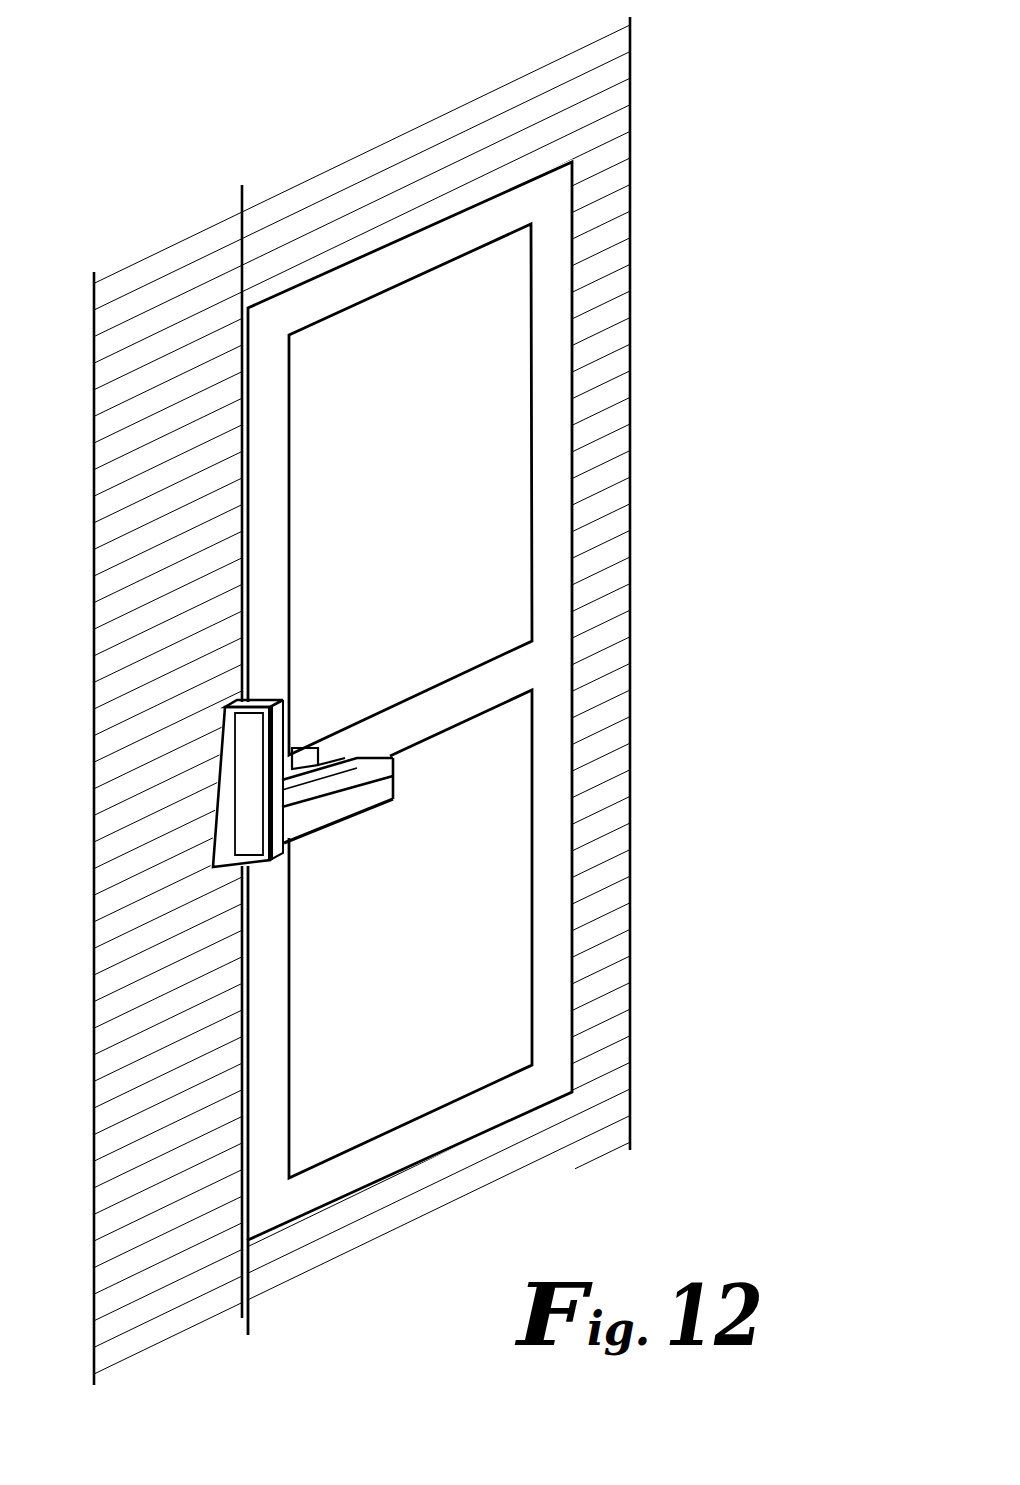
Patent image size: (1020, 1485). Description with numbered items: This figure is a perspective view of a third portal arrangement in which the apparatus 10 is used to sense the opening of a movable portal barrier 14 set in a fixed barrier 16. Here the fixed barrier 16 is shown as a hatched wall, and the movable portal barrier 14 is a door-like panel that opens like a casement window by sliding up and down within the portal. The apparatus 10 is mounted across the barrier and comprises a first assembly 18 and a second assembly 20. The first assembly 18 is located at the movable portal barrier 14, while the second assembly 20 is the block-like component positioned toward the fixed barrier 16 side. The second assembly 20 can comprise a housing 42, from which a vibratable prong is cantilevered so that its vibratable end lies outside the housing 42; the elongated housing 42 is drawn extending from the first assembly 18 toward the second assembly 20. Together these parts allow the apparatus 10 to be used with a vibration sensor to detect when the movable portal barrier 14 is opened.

The apparatus 10 is at (336, 801).
The movable portal barrier 14 is at (556, 600).
The fixed barrier 16 is at (603, 265).
The first assembly 18 is at (400, 757).
The second assembly 20 is at (277, 850).
The housing 42 is at (394, 797).